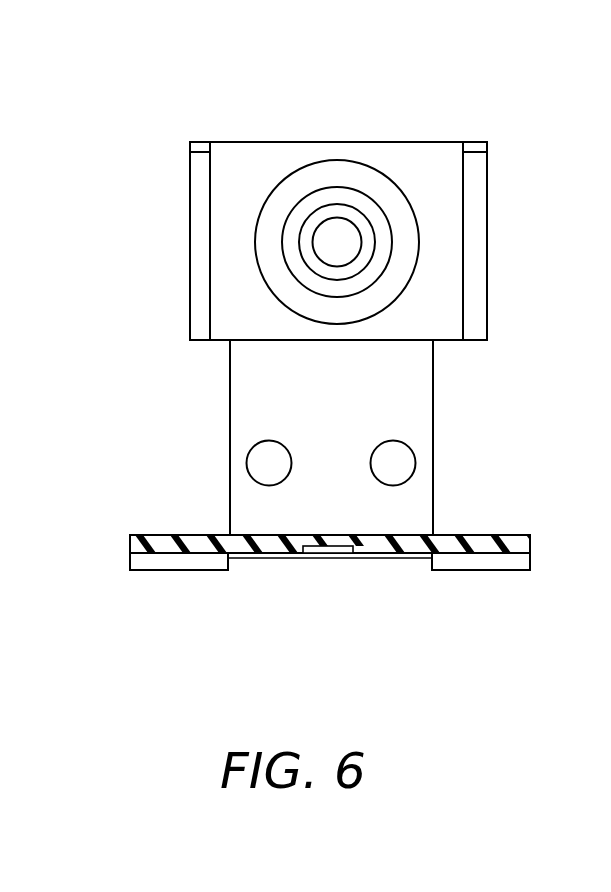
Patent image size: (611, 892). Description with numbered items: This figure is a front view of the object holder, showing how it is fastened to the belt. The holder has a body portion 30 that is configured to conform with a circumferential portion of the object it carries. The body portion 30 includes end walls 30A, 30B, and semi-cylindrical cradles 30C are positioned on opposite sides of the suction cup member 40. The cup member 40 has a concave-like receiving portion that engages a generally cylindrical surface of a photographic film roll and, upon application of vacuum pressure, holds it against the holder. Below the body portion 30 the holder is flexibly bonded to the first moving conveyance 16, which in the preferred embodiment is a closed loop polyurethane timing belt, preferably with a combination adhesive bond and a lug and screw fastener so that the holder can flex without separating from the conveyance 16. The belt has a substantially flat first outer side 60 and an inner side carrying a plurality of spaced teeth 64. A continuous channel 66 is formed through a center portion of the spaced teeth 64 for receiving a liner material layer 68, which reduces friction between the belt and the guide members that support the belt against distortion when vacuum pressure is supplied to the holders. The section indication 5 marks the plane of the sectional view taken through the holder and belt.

The section line 5- 5 is at (337, 63).
The first moving conveyance 16 is at (470, 535).
The body portion 30 is at (450, 142).
The end wall 30A is at (190, 193).
The end wall 30B is at (487, 197).
The semi-cylindrical cradle 30C is at (196, 270).
The cup member 40 is at (372, 178).
The first outer side 60 is at (167, 535).
The spaced teeth 64 is at (165, 572).
The continuous channel 66 is at (273, 578).
The liner material layer 68 is at (385, 557).